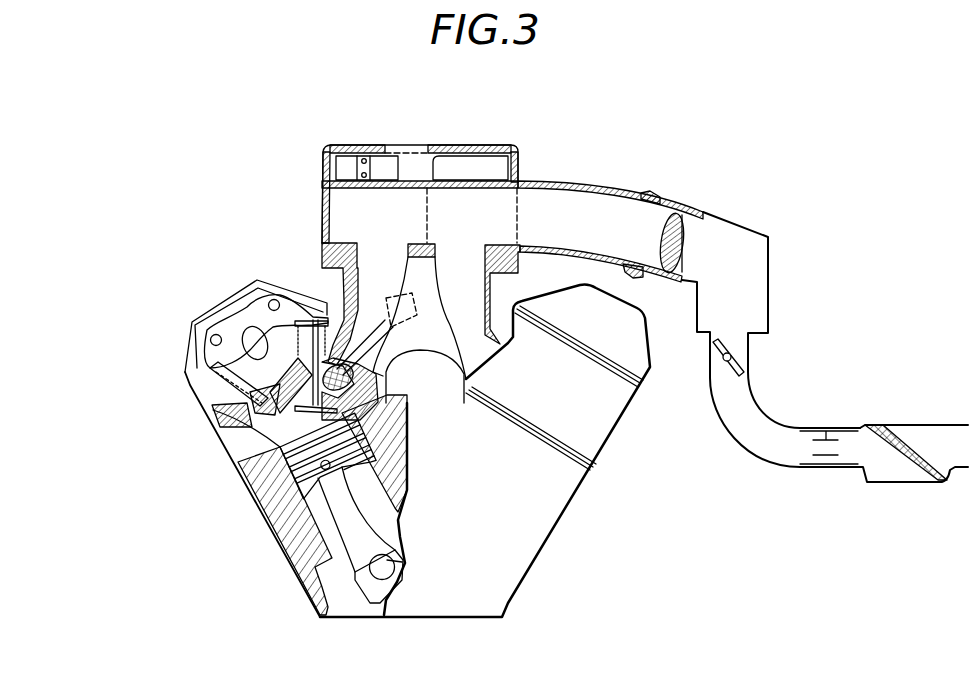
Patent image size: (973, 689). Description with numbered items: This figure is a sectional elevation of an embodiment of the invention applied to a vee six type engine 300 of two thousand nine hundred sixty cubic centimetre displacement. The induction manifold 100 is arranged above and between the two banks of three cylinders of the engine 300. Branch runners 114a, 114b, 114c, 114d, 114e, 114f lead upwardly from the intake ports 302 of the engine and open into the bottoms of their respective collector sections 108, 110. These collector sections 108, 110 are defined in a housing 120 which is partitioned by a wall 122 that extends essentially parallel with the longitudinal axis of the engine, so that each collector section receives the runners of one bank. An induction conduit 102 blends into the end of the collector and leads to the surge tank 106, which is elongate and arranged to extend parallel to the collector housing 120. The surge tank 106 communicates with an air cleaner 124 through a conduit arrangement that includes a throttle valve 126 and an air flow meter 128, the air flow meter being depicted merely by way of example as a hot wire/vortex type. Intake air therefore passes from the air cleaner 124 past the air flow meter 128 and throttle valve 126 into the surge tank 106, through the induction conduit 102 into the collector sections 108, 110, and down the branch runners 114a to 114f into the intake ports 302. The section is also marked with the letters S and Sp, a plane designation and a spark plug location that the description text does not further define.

The induction manifold 100 is at (297, 197).
The induction conduit 102 is at (573, 218).
The surge tank 106 is at (747, 290).
The collector section 108 is at (350, 205).
The collector section 110 is at (482, 207).
The branch runner 114a is at (243, 334).
The branch runner 114b is at (348, 389).
The branch runner 114c is at (348, 389).
The branch runner 114d is at (299, 285).
The branch runner 114e is at (419, 318).
The branch runner 114f is at (458, 278).
The housing 120 is at (461, 176).
The wall 122 is at (424, 243).
The air cleaner 124 is at (908, 485).
The throttle valve 126 is at (733, 370).
The air flow meter 128 is at (826, 456).
The V-6 engine 300 is at (292, 528).
The intake port 302 is at (377, 350).
The section plane S is at (687, 240).
The spark plug Sp is at (400, 348).